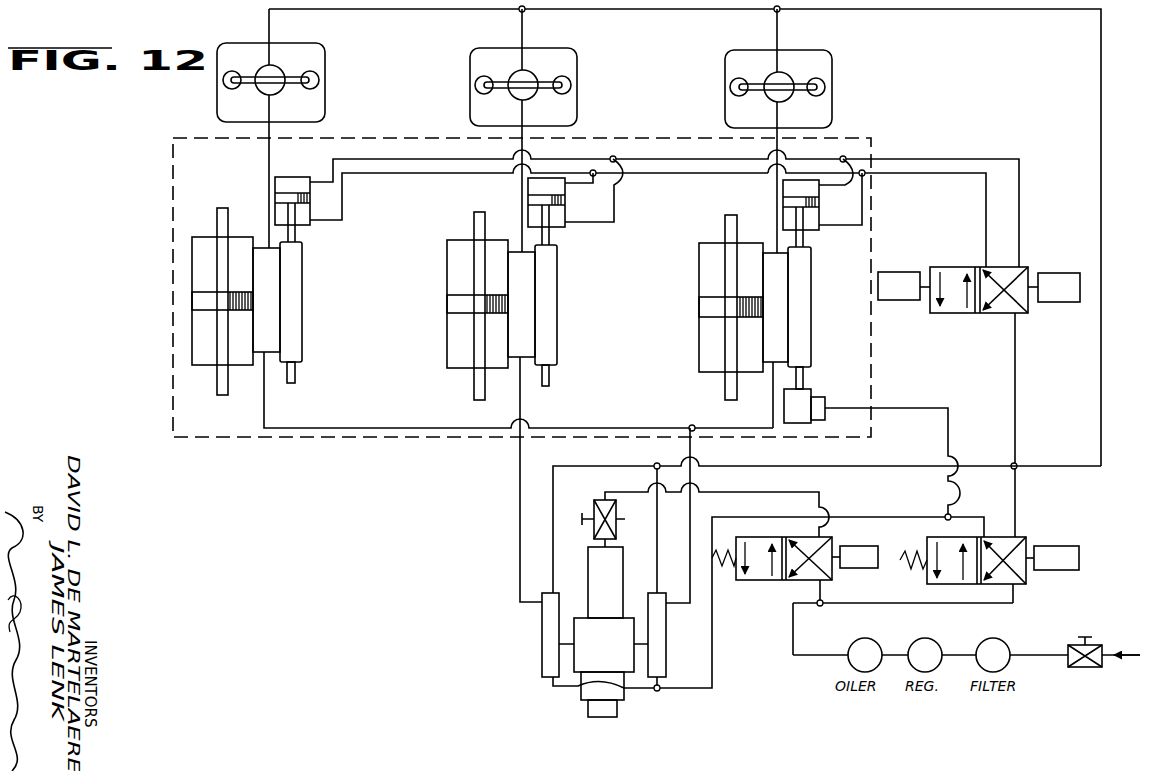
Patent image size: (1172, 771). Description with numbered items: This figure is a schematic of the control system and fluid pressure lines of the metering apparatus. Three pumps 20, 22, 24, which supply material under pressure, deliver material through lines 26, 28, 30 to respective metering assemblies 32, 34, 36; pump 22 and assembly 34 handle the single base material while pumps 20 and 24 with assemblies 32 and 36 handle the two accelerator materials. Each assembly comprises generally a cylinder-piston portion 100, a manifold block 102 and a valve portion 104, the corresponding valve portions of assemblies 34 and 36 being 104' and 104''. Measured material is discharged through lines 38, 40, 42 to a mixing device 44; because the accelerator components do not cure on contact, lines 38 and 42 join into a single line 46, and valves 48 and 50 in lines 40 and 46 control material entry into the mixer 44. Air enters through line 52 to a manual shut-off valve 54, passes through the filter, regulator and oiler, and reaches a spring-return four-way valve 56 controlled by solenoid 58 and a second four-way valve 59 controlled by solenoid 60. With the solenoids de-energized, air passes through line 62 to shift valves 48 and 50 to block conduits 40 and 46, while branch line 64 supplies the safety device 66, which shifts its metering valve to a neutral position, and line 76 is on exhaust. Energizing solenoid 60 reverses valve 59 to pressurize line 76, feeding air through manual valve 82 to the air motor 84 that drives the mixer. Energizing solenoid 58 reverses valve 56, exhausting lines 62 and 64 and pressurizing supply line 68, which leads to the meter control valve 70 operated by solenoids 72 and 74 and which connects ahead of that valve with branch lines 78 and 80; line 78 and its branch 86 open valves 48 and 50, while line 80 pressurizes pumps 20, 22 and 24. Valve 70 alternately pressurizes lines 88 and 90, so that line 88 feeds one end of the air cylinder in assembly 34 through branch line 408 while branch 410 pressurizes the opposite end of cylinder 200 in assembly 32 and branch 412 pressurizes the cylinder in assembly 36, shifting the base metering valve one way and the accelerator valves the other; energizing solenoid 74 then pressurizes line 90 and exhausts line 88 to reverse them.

The pump 20 is at (327, 102).
The pump 22 is at (579, 99).
The pump 24 is at (834, 99).
The line 26 is at (268, 159).
The line 28 is at (521, 192).
The line 30 is at (775, 191).
The metering assembly 32 is at (318, 312).
The metering assembly 34 is at (445, 286).
The metering assembly 36 is at (697, 296).
The line 38 is at (326, 427).
The line 40 is at (518, 474).
The line 42 is at (773, 400).
The mixing device 44 is at (577, 703).
The single line 46 is at (676, 606).
The valve 48 is at (542, 655).
The valve 50 is at (658, 662).
The line 52 is at (1112, 652).
The manual shut-off valve 54 is at (1074, 645).
The four-way valve 56 is at (1019, 546).
The solenoid 58 is at (1060, 548).
The four-way valve 59 is at (825, 577).
The solenoid 60 is at (858, 548).
The line 62 is at (713, 656).
The branch line 64 is at (950, 434).
The safety device 66 is at (802, 407).
The supply line 68 is at (1018, 374).
The four-way valve 70 is at (1020, 276).
The solenoid 72 is at (893, 275).
The solenoid 74 is at (1058, 275).
The line 76 is at (733, 498).
The branch line 78 is at (864, 468).
The branch line 80 is at (1101, 407).
The manual valve 82 is at (617, 519).
The air motor 84 is at (612, 585).
The branch 86 is at (658, 560).
The line 88 is at (986, 210).
The line 90 is at (1019, 200).
The cylinder-piston portion 100 is at (203, 356).
The manifold block 102 is at (262, 352).
The valve portion 104 is at (318, 302).
The cylinder 104' is at (573, 315).
The cylinder 104'' is at (824, 318).
The air cylinder 200 is at (290, 177).
The branch line 408 is at (577, 187).
The branch 410 is at (328, 224).
The branch 412 is at (840, 226).